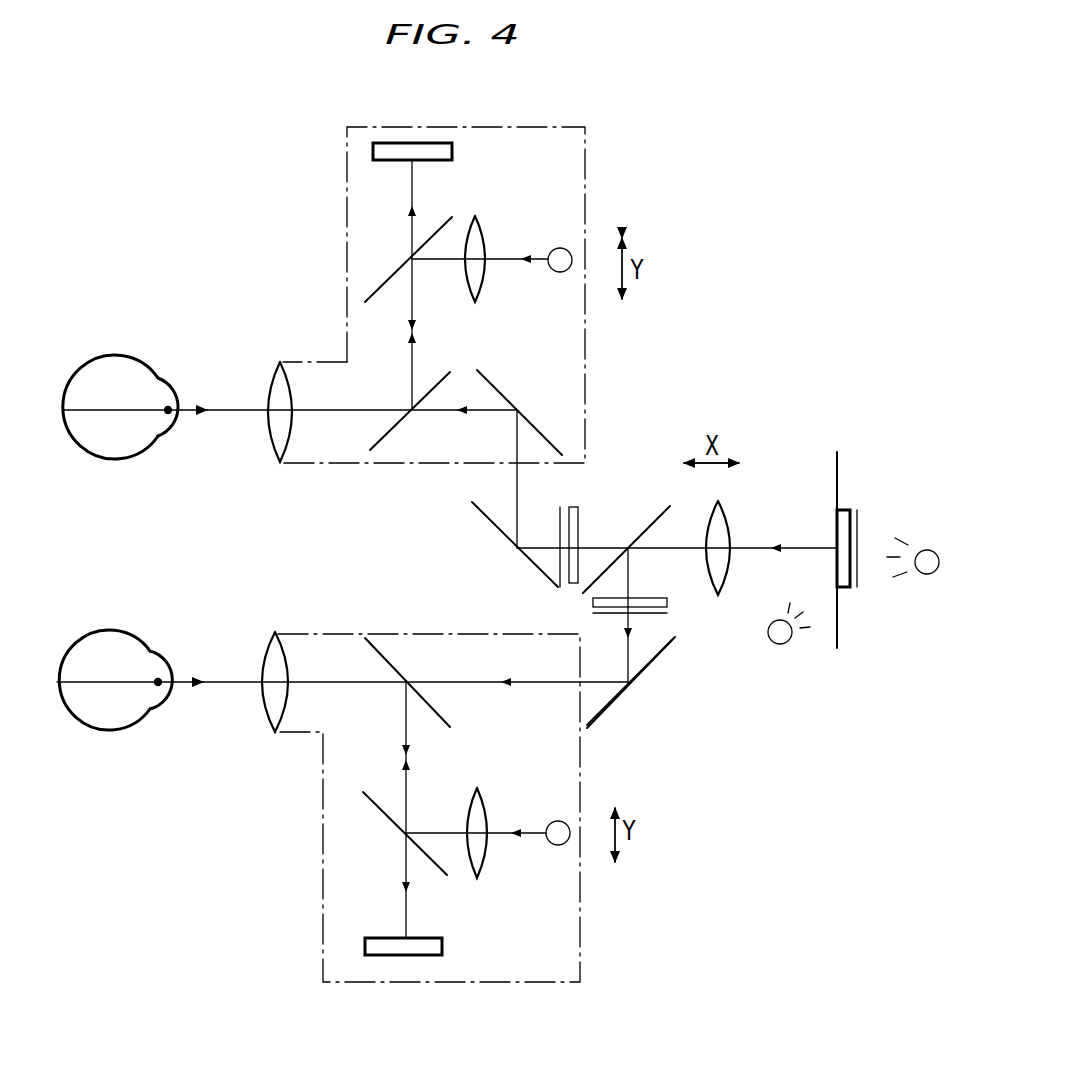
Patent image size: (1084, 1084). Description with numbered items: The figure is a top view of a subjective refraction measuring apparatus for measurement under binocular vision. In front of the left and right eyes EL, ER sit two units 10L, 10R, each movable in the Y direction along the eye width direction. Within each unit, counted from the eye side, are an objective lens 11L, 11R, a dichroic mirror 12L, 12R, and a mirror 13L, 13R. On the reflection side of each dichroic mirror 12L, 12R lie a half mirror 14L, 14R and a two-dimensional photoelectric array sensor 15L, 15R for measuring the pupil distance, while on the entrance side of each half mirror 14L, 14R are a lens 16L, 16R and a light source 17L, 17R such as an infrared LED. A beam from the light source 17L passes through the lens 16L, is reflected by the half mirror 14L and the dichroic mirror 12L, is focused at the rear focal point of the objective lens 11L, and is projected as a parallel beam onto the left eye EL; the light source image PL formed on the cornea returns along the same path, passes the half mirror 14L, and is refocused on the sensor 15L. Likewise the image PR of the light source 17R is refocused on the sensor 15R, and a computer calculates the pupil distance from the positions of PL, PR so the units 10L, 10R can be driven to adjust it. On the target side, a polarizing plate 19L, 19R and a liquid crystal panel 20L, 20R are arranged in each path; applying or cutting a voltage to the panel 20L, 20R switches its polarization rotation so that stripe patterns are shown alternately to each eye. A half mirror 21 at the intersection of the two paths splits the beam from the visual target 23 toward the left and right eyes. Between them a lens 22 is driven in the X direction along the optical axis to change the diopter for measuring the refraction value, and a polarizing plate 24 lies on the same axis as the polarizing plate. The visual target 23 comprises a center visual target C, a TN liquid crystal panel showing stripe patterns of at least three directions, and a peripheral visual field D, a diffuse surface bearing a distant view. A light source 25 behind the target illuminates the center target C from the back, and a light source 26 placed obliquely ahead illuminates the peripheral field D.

The unit 10L is at (587, 150).
The unit 10R is at (582, 743).
The objective lens 11L is at (268, 433).
The objective lens 11R is at (265, 652).
The dichroic mirror 12L is at (393, 430).
The dichroic mirror 12R is at (378, 642).
The mirror 13L is at (495, 387).
The mirror 13R is at (612, 700).
The half mirror 14L is at (380, 288).
The half mirror 14R is at (373, 808).
The two-dimensional photoelectric array sensor 15L is at (392, 143).
The two-dimensional photoelectric array sensor 15R is at (385, 955).
The lens 16L is at (485, 240).
The lens 16R is at (483, 870).
The light source 17L is at (567, 248).
The light source 17R is at (568, 840).
The polarizing plate 19L is at (552, 572).
The polarizing plate 19R is at (660, 613).
The liquid crystal panel 20L is at (578, 513).
The liquid crystal panel 20R is at (667, 605).
The half mirror 21 is at (640, 530).
The lens 22 is at (730, 532).
The visual target 23 is at (840, 472).
The polarizing plate 24 is at (857, 575).
The light source 25 is at (927, 550).
The light source 26 is at (785, 647).
The left eye EL is at (150, 363).
The right eye ER is at (110, 628).
The light source image PL is at (175, 393).
The light source image PR is at (165, 662).
The peripheral visual field D is at (836, 490).
The center visual target C is at (857, 535).